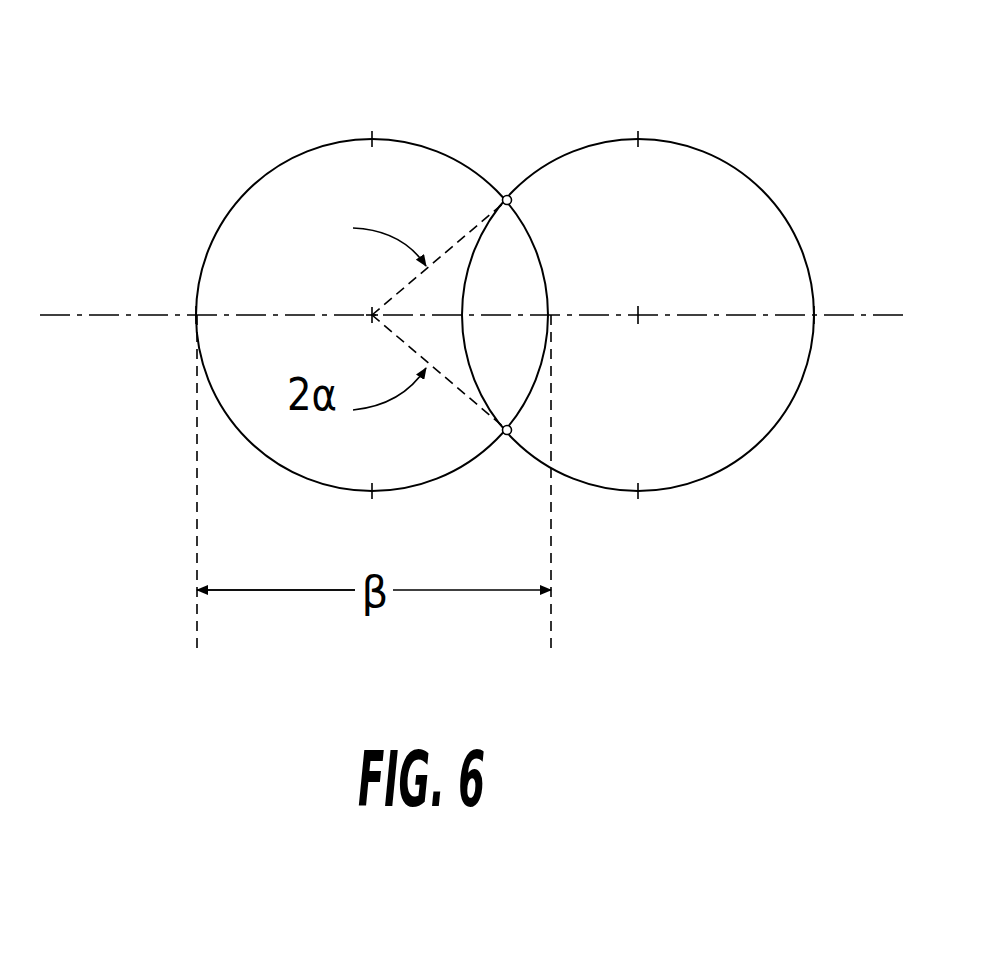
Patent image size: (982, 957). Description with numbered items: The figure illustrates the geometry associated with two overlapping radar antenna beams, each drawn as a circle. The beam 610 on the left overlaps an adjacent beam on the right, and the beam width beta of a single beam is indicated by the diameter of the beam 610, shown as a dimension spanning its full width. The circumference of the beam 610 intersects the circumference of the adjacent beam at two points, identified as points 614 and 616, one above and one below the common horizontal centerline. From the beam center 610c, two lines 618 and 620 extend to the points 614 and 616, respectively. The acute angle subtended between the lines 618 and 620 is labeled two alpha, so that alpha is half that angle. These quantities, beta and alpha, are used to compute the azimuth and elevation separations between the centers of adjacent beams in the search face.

The beam 610 is at (252, 190).
The beam center 610c is at (371, 313).
The point of intersection 614 is at (512, 199).
The point of intersection 616 is at (513, 428).
The line 618 is at (471, 236).
The line 620 is at (459, 393).